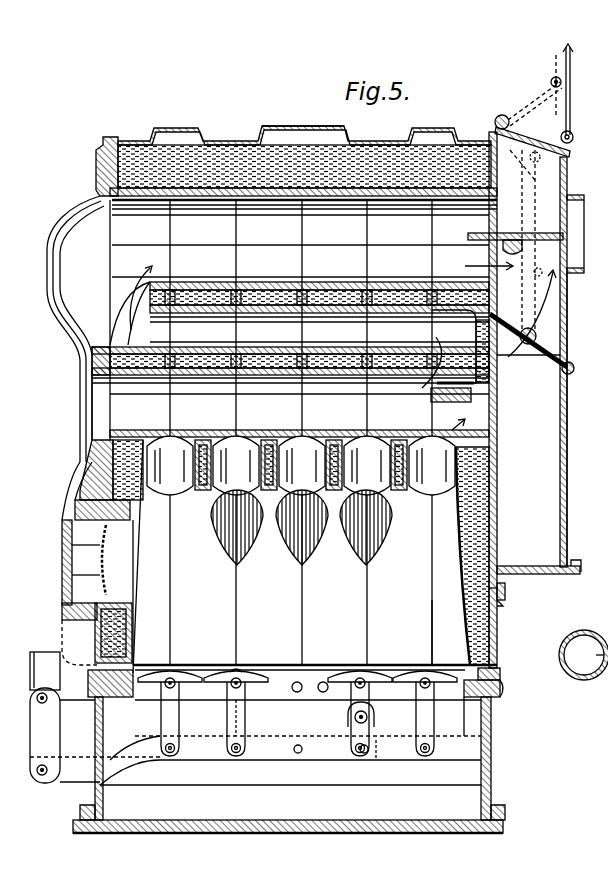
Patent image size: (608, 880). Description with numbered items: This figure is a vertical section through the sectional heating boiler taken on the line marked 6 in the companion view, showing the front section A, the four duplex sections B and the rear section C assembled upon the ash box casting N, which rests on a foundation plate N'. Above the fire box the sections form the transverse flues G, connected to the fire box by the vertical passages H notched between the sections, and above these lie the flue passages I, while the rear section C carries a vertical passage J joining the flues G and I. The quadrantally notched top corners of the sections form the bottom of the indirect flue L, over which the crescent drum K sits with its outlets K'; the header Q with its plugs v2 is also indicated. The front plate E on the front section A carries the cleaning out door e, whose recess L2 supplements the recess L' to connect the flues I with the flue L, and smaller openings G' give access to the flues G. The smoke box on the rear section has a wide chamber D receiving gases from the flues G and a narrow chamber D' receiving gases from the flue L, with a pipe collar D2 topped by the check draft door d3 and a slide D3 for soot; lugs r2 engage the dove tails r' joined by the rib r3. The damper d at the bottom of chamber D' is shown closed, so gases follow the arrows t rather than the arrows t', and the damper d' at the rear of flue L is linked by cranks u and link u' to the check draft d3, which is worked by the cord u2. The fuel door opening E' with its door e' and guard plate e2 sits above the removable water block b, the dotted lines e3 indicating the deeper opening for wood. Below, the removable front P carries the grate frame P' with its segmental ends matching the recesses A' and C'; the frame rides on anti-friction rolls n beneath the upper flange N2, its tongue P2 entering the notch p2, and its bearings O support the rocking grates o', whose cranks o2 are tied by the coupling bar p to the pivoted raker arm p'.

The front plate E is at (94, 166).
The drum K is at (304, 152).
The outlets K' is at (316, 122).
The section line 6 is at (213, 140).
The indirect flue L is at (300, 243).
The cleaning out door e is at (67, 329).
The flue passages I is at (290, 328).
The recess L2 is at (100, 305).
The recess L' is at (130, 313).
The arrows t is at (283, 326).
The vertical passage J is at (460, 356).
The transverse passages G is at (290, 398).
The smaller openings G' is at (98, 407).
The arrows t' is at (495, 355).
The vertical passages H is at (299, 497).
The duplex sections B is at (315, 627).
The rear section C is at (472, 556).
The segmental recess C' is at (442, 632).
The front section A is at (95, 556).
The opening for fuel door E' is at (113, 518).
The door e' is at (71, 541).
The guard plate e2 is at (112, 560).
The removable water block b is at (122, 598).
The dotted lines e3 is at (68, 633).
The segmental recess A' is at (145, 592).
The ash box casting N is at (297, 745).
The foundation plate N' is at (288, 816).
The upper flange N2 is at (490, 670).
The tongue P2 is at (500, 679).
The ledge or notch p2 is at (498, 690).
The bearings O is at (308, 713).
The rocking grates o' is at (245, 653).
The cranks o2 is at (247, 721).
The anti-friction rolls n is at (377, 721).
The coupling bar p is at (290, 762).
The front of the ash box P is at (95, 717).
The raker arm p' is at (26, 702).
The grate frame P' is at (457, 716).
The wide chamber D is at (532, 362).
The narrow chamber D' is at (585, 420).
The pipe collar D2 is at (584, 224).
The slide D3 is at (522, 567).
The check draft door d3 is at (534, 128).
The cord u2 is at (556, 57).
The cranks u is at (503, 238).
The link u' is at (522, 173).
The damper d' is at (504, 240).
The damper d is at (532, 342).
The lugs r2 is at (490, 587).
The dove tails r' is at (512, 594).
The rib r3 is at (502, 603).
The header Q is at (572, 678).
The plugs v2 is at (588, 653).